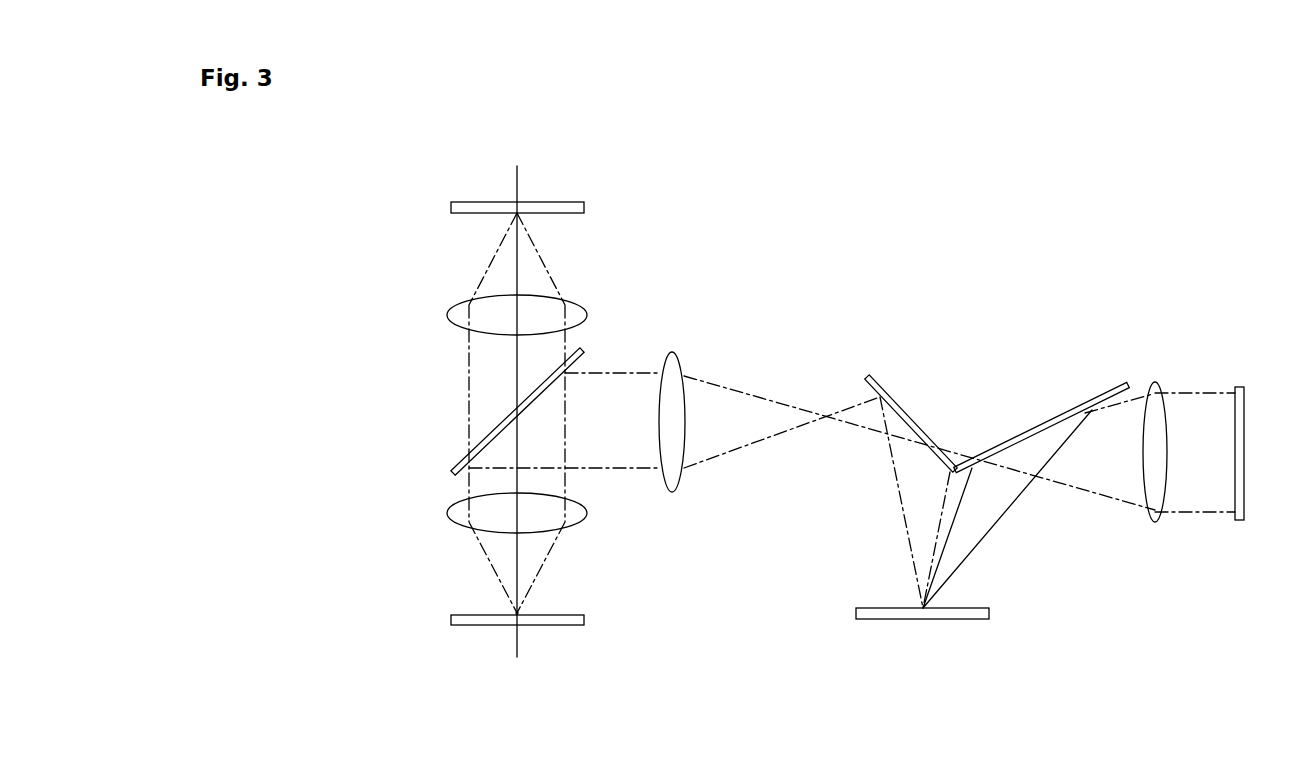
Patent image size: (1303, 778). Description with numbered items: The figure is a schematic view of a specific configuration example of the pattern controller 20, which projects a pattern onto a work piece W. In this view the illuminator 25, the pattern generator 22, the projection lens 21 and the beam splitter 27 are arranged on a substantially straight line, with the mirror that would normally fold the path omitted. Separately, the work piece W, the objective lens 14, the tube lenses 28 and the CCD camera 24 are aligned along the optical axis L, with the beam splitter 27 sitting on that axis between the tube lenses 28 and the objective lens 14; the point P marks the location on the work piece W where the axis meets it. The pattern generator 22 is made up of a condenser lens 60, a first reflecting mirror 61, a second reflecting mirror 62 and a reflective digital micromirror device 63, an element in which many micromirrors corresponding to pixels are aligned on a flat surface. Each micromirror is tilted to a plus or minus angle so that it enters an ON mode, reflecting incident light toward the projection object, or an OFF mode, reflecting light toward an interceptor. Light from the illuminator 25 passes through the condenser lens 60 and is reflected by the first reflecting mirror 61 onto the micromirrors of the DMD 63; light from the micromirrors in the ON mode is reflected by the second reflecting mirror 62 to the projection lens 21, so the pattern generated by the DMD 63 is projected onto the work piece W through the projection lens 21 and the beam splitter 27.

The objective lens 14 is at (585, 510).
The pattern controller 20 is at (808, 252).
The projection lens 21 is at (673, 350).
The pattern generator 22 is at (997, 380).
The CCD camera 24 is at (585, 206).
The illuminator 25 is at (1240, 386).
The beam splitter 27 is at (590, 349).
The tube lenses 28 is at (449, 313).
The condenser lens 60 is at (1156, 382).
The first reflecting mirror 61 is at (1092, 398).
The second reflecting mirror 62 is at (897, 385).
The reflective digital micromirror device (DMD) 63 is at (885, 620).
The measurement point P is at (514, 611).
The work piece W is at (585, 620).
The optical axis L is at (520, 655).